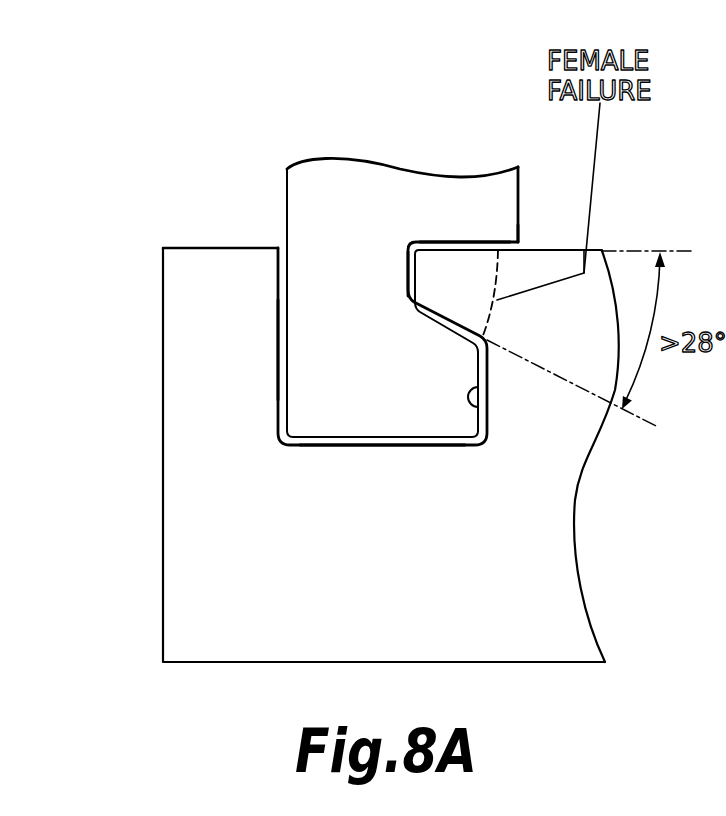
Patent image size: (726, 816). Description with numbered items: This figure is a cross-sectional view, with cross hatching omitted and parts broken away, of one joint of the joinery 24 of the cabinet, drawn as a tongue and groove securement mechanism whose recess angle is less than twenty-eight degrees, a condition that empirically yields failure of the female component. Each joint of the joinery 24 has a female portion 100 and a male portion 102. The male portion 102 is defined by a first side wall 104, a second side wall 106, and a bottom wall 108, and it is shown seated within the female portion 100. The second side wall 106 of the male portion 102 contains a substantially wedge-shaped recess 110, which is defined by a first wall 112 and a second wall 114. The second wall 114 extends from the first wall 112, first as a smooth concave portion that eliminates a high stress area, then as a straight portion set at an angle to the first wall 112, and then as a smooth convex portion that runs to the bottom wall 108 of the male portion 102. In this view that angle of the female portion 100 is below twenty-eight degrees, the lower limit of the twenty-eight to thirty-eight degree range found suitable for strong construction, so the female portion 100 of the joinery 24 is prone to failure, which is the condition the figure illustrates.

The joinery 24 is at (280, 246).
The female portion 100 is at (529, 236).
The male portion 102 is at (283, 182).
The first side wall 104 is at (282, 343).
The second side wall 106 is at (487, 412).
The bottom wall 108 is at (378, 437).
The substantially wedge-shaped recess 110 is at (415, 278).
The first wall 112 is at (479, 247).
The second wall 114 is at (478, 368).